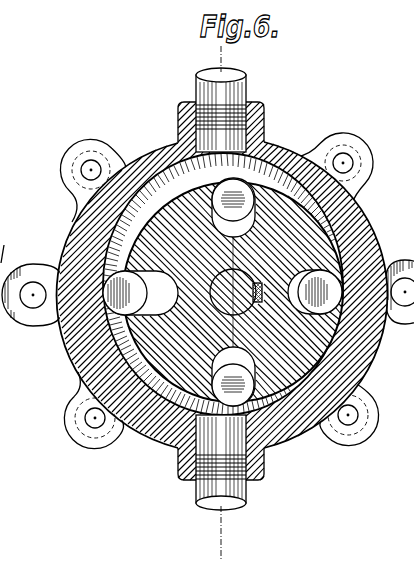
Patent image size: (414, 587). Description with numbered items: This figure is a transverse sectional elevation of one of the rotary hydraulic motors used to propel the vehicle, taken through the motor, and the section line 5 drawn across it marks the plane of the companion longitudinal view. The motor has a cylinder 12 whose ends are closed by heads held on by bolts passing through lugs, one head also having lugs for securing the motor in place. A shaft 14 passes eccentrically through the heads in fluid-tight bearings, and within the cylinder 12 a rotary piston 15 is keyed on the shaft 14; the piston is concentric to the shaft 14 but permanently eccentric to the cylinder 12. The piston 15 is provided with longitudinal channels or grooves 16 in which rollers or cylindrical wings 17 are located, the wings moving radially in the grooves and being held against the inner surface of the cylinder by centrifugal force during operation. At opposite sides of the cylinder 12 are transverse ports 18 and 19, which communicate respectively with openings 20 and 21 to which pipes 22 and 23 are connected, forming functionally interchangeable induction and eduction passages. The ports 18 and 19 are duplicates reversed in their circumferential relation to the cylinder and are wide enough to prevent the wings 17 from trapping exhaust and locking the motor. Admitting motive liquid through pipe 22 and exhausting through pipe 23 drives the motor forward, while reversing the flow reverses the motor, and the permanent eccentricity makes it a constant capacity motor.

The section line 5- 5 is at (260, 58).
The cylinder 12 is at (255, 227).
The shaft 14 is at (268, 270).
The rotary piston 15 is at (288, 333).
The longitudinal channels or grooves 16 is at (372, 193).
The rollers or cylindrical wings 17 is at (103, 310).
The port 18 is at (167, 426).
The port 19 is at (167, 152).
The opening 20 is at (186, 454).
The opening 21 is at (193, 128).
The pipe 22 is at (197, 500).
The pipe 23 is at (197, 88).